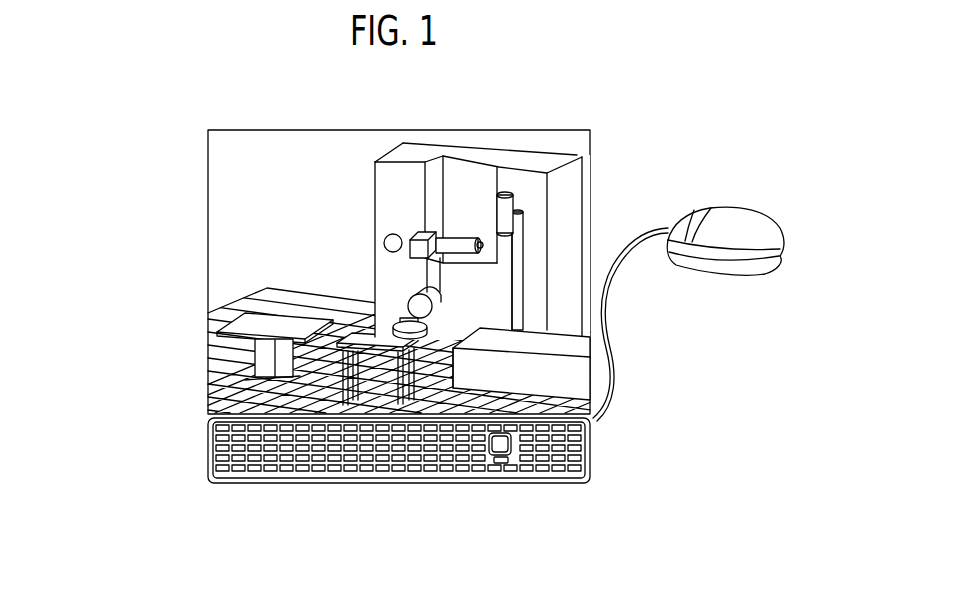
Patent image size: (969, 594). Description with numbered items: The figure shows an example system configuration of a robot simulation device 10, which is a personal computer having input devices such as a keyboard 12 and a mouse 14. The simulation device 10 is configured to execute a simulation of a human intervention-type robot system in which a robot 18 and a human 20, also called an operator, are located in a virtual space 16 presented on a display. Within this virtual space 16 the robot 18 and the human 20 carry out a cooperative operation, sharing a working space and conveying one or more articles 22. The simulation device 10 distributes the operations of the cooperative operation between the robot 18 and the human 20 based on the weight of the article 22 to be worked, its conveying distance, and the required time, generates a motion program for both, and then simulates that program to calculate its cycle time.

The robot simulation device 10 is at (183, 133).
The keyboard 12 is at (238, 484).
The mouse 14 is at (752, 212).
The virtual space 16 is at (208, 232).
The robot 18 is at (422, 244).
The human 20 is at (517, 232).
The article 22 is at (500, 195).